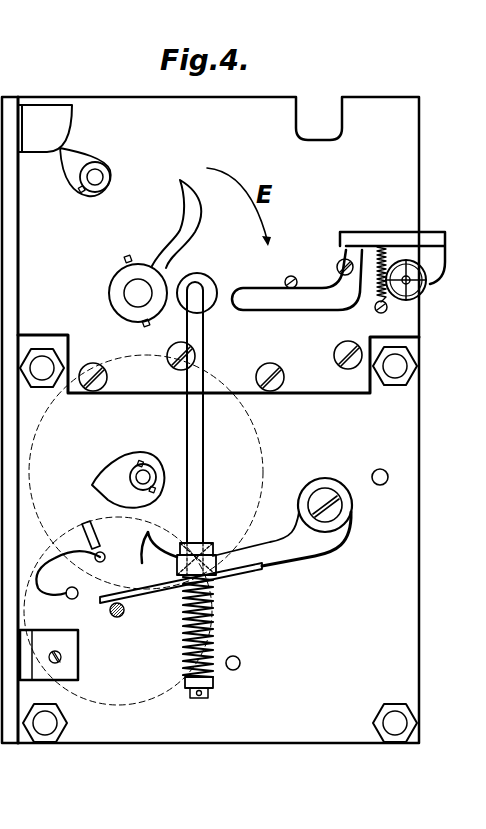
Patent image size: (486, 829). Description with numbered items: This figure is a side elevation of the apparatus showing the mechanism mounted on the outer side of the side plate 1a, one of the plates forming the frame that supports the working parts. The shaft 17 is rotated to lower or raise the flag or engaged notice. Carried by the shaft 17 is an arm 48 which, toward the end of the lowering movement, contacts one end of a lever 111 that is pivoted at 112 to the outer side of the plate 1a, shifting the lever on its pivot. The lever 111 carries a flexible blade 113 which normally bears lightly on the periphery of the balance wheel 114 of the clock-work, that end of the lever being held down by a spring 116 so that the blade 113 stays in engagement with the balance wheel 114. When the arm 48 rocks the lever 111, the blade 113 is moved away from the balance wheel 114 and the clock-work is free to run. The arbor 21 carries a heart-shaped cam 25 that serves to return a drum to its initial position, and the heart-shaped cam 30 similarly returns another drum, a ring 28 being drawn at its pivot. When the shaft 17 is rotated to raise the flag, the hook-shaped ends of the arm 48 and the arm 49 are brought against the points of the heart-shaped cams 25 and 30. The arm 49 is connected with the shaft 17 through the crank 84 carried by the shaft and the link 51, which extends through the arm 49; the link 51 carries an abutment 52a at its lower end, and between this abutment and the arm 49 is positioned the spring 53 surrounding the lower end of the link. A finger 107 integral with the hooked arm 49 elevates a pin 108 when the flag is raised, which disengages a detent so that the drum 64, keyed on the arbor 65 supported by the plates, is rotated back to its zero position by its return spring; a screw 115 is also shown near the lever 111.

The side plate 1a is at (403, 658).
The heart-shaped cam 25 is at (78, 160).
The arbor 21 is at (101, 177).
The arm 48 is at (170, 243).
The shaft 17 is at (137, 297).
The crank 84 is at (172, 278).
The link 51 is at (195, 453).
The spring 53 is at (213, 645).
The abutment 52a is at (213, 692).
The arm 49 is at (300, 542).
The finger 107 is at (153, 597).
The arbor 65 is at (112, 614).
The heart-shaped cam 30 is at (123, 467).
The pivot 28 is at (147, 470).
The pin 108 is at (101, 559).
The drum 64 is at (147, 700).
The lever 111 is at (268, 305).
The spring 116 is at (375, 247).
The pivot 112 is at (340, 263).
The screw 115 is at (285, 281).
The balance wheel 114 is at (412, 307).
The flexible blade 113 is at (430, 273).